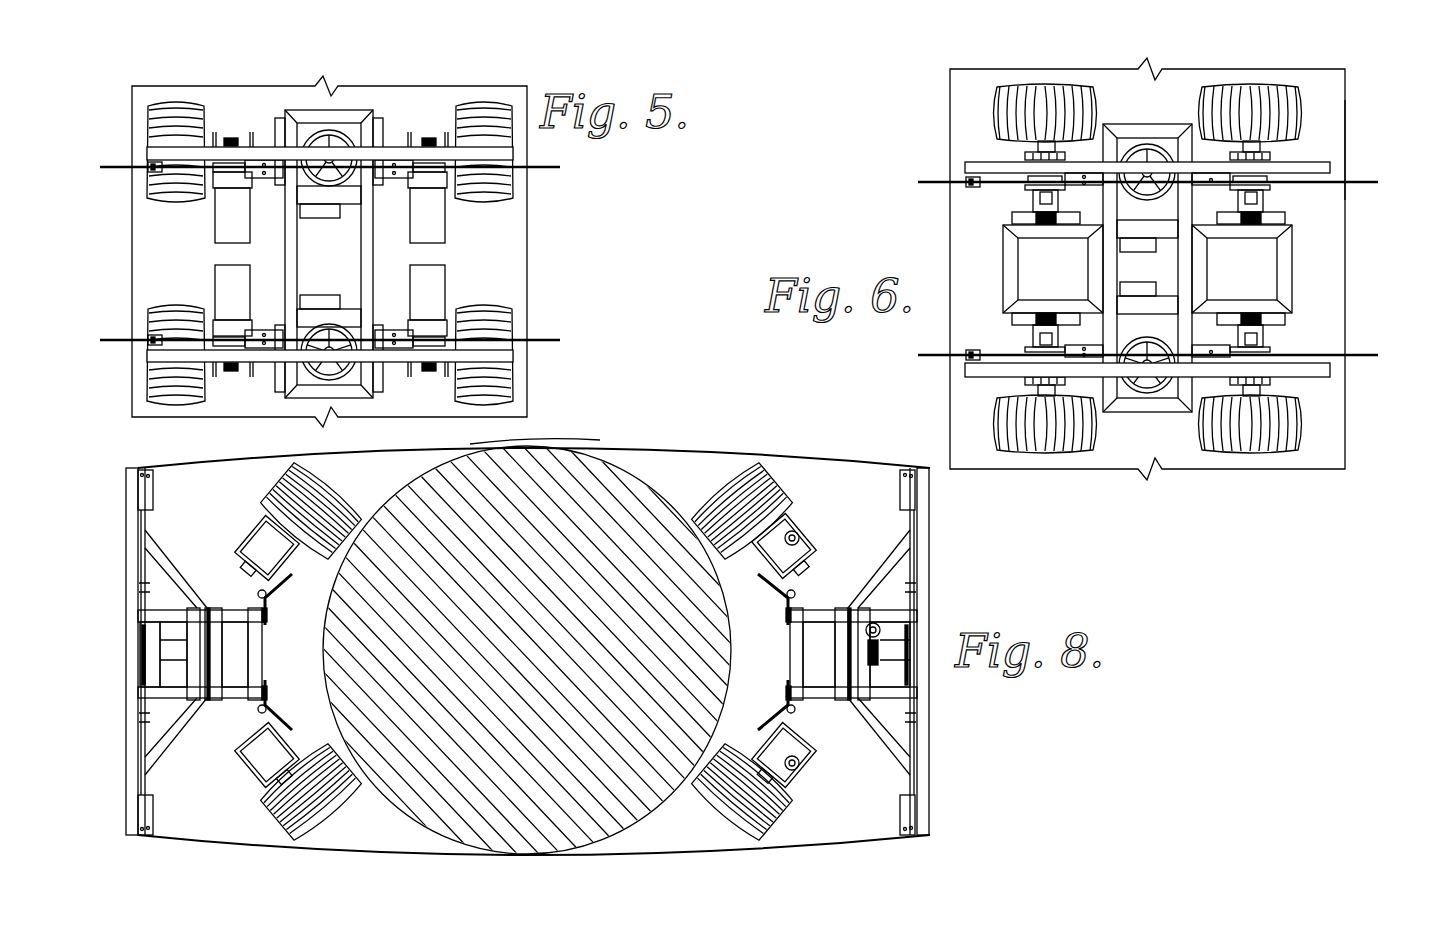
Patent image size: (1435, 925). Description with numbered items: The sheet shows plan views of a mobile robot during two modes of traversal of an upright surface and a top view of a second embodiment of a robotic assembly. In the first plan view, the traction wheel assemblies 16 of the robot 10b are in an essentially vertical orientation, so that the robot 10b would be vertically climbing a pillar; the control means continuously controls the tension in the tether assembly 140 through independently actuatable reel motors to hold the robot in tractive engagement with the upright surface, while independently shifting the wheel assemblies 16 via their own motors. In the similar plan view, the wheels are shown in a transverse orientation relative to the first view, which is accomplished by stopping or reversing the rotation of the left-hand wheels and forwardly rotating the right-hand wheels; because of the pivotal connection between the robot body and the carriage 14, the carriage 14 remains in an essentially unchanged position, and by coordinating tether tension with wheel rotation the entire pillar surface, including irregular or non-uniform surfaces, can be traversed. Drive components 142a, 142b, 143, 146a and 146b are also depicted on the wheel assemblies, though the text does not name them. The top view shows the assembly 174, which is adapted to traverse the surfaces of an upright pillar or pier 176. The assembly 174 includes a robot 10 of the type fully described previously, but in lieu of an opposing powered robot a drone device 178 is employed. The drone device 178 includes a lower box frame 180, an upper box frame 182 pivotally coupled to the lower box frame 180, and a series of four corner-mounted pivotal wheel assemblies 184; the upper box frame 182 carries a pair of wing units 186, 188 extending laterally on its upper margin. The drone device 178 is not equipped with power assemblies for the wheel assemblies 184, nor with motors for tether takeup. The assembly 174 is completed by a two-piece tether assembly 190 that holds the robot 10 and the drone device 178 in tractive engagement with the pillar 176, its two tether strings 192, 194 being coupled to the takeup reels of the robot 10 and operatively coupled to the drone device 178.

In FIG. 6, the robot 10 is at (1220, 53).
In FIG. 8, the robot 10 is at (845, 468).
In FIG. 5, the robot 10b is at (418, 73).
In FIG. 6, the robot 10b is at (1336, 120).
In FIG. 5, the carriage 14 is at (360, 102).
In FIG. 6, the traction wheel assembly 16 is at (1015, 103).
In FIG. 6, the tether assembly 140 is at (920, 211).
In FIG. 5, the front axle 142a is at (560, 170).
In FIG. 6, the front axle 142a is at (1345, 182).
In FIG. 5, the rear axle 142b is at (558, 340).
In FIG. 6, the rear axle 142b is at (1343, 355).
In FIG. 6, the motor housing 143 is at (1210, 272).
In FIG. 5, the front axle end 146a is at (112, 167).
In FIG. 6, the front axle end 146a is at (930, 182).
In FIG. 5, the rear axle end 146b is at (112, 340).
In FIG. 6, the rear axle end 146b is at (930, 355).
In FIG. 8, the assembly 174 is at (955, 608).
In FIG. 8, the pillar 176 is at (651, 470).
In FIG. 8, the drone device 178 is at (512, 644).
In FIG. 8, the lower box frame 180 is at (233, 606).
In FIG. 8, the upper box frame 182 is at (132, 652).
In FIG. 8, the pivotal wheel assembly 184 is at (278, 806).
In FIG. 8, the wing unit 186 is at (136, 790).
In FIG. 8, the wing unit 188 is at (130, 582).
In FIG. 8, the tether assembly 190 is at (550, 443).
In FIG. 8, the tether string 192 is at (694, 450).
In FIG. 8, the tether string 194 is at (656, 856).